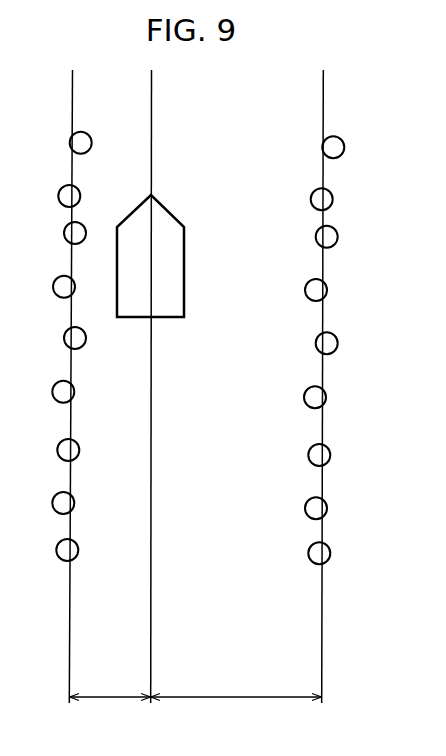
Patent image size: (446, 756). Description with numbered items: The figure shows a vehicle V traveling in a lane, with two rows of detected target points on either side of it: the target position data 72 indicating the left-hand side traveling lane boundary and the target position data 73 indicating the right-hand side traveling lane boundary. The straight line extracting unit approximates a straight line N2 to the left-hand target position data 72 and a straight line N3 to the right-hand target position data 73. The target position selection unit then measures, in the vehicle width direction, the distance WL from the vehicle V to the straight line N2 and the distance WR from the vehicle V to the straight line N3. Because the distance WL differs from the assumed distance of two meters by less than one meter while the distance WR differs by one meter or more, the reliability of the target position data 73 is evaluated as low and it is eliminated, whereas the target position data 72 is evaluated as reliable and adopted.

The vehicle V is at (184, 262).
The target position data indicating the left-hand side traveling lane boundary 72 is at (80, 452).
The target position data indicating the right-hand side traveling lane boundary 73 is at (330, 457).
The straight line N2 is at (70, 610).
The straight line N3 is at (322, 610).
The distance WL is at (110, 687).
The distance WR is at (236, 687).